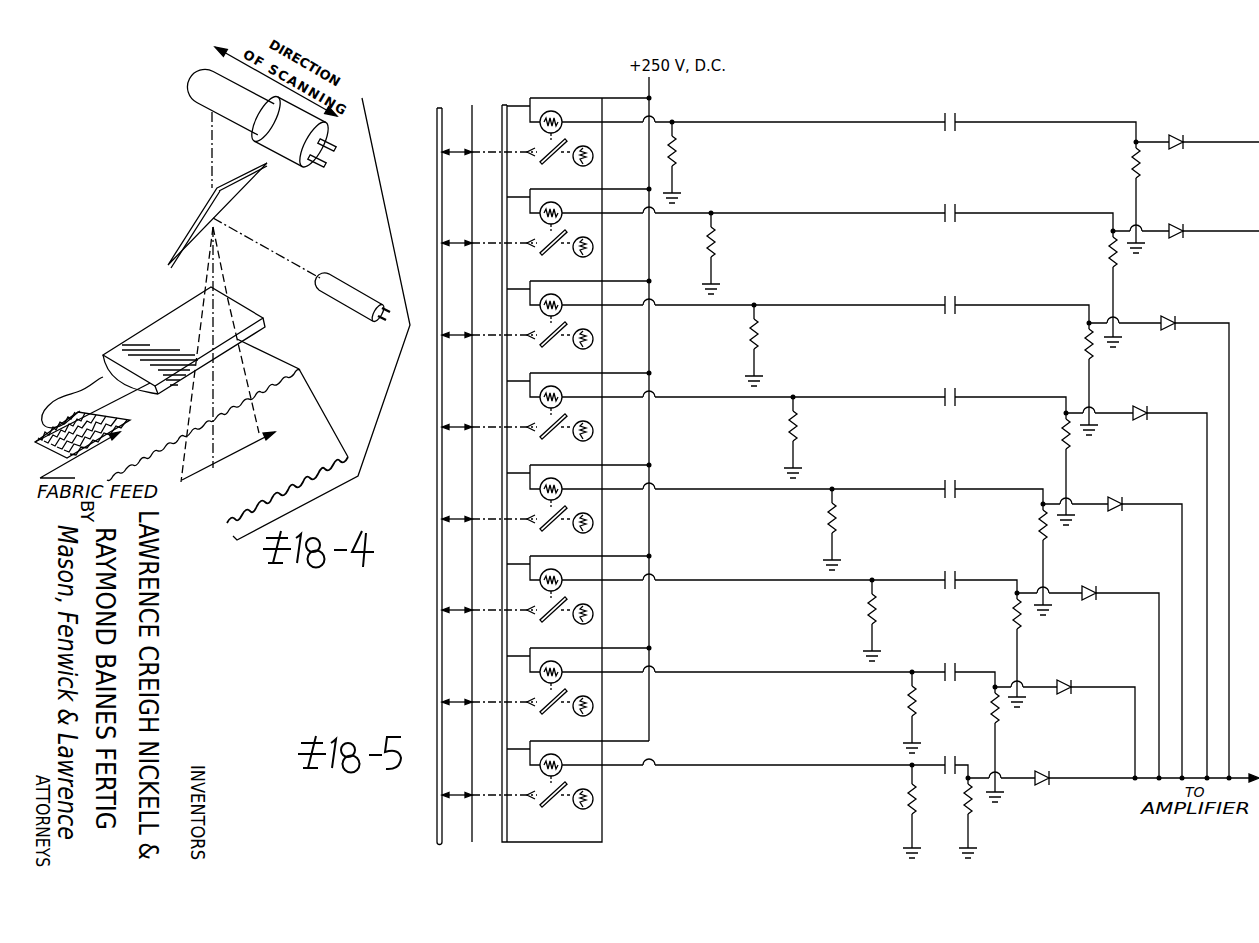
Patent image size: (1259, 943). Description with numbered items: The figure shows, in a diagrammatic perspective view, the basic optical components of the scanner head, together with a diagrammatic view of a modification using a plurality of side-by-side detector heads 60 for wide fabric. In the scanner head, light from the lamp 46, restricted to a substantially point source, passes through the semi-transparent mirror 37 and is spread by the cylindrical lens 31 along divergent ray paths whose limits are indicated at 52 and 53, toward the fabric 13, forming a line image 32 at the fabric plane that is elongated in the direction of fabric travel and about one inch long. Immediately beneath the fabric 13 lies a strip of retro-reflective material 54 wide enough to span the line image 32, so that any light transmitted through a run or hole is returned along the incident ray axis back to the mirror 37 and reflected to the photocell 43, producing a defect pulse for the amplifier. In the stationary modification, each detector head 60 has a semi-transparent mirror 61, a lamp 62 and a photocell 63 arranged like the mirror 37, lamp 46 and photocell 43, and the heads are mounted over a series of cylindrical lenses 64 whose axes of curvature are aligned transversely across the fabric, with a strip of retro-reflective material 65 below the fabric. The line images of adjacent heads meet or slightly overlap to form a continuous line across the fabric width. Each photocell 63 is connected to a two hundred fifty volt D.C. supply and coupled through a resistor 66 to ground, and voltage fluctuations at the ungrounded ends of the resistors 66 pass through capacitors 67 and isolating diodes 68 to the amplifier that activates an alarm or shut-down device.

In FIG. 4, the fabric 13 is at (62, 383).
In FIG. 4, the lens 31 is at (252, 313).
In FIG. 4, the line image 32 is at (217, 462).
In FIG. 4, the semi-transparent mirror 37 is at (243, 205).
In FIG. 4, the photocell 43 is at (340, 294).
In FIG. 4, the lamp 46 is at (291, 168).
In FIG. 4, the limit of divergent ray paths 52 is at (266, 395).
In FIG. 4, the limit of divergent ray paths 53 is at (186, 405).
In FIG. 4, the strip of retro-reflective material 54 is at (326, 448).
In FIG. 5, the detector heads 60 is at (548, 441).
In FIG. 5, the semi-transparent mirror 61 is at (567, 258).
In FIG. 5, the lamp 62 is at (603, 248).
In FIG. 5, the photocell 63 is at (587, 206).
In FIG. 5, the cylindrical lenses 64 is at (502, 280).
In FIG. 5, the strip of retro-reflective material 65 is at (437, 492).
In FIG. 5, the resistor 66 is at (676, 165).
In FIG. 5, the capacitors 67 is at (953, 115).
In FIG. 5, the isolating diodes 68 is at (1184, 138).